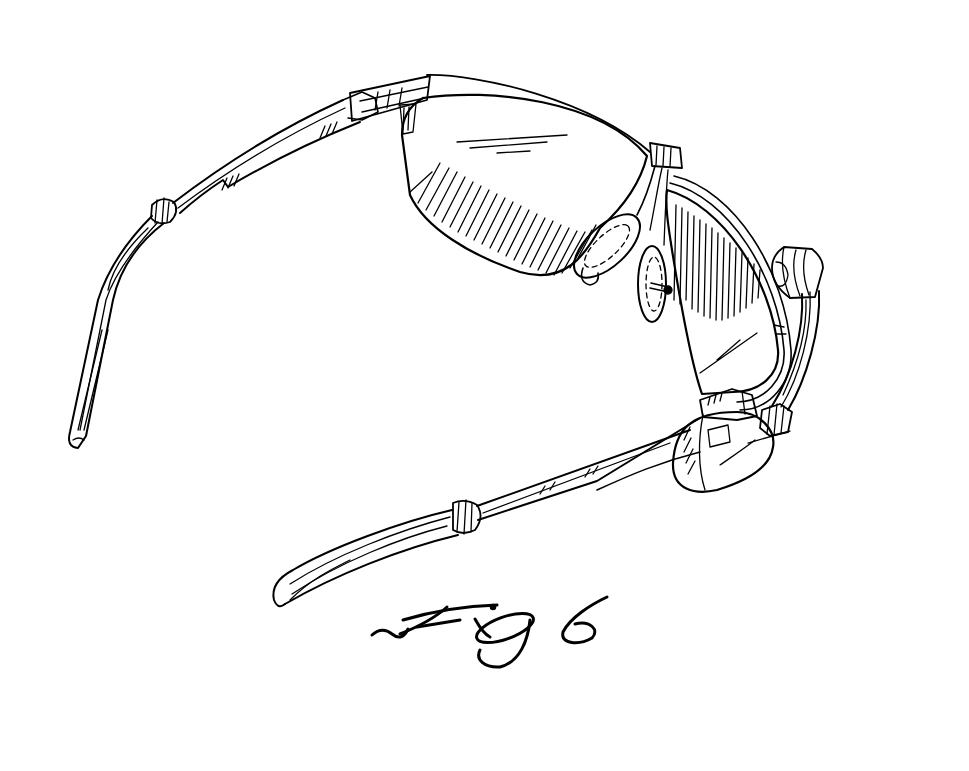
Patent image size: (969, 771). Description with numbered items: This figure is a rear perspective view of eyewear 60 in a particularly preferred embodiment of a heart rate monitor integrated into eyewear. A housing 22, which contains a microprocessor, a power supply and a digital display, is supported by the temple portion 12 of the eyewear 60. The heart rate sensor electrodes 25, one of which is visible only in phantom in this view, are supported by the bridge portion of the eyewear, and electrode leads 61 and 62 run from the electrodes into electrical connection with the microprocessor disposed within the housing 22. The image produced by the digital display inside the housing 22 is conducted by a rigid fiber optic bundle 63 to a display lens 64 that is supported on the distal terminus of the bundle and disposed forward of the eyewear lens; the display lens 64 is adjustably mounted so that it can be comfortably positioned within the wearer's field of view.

The eyewear 60 is at (334, 95).
The electrode lead 61 is at (654, 147).
The electrode lead 62 is at (692, 186).
The display lens 64 is at (793, 247).
The rigid fiber optic bundle 63 is at (808, 362).
The housing 22 is at (735, 460).
The temple portion 12 is at (622, 478).
The heart rate sensor electrodes 25 is at (587, 280).